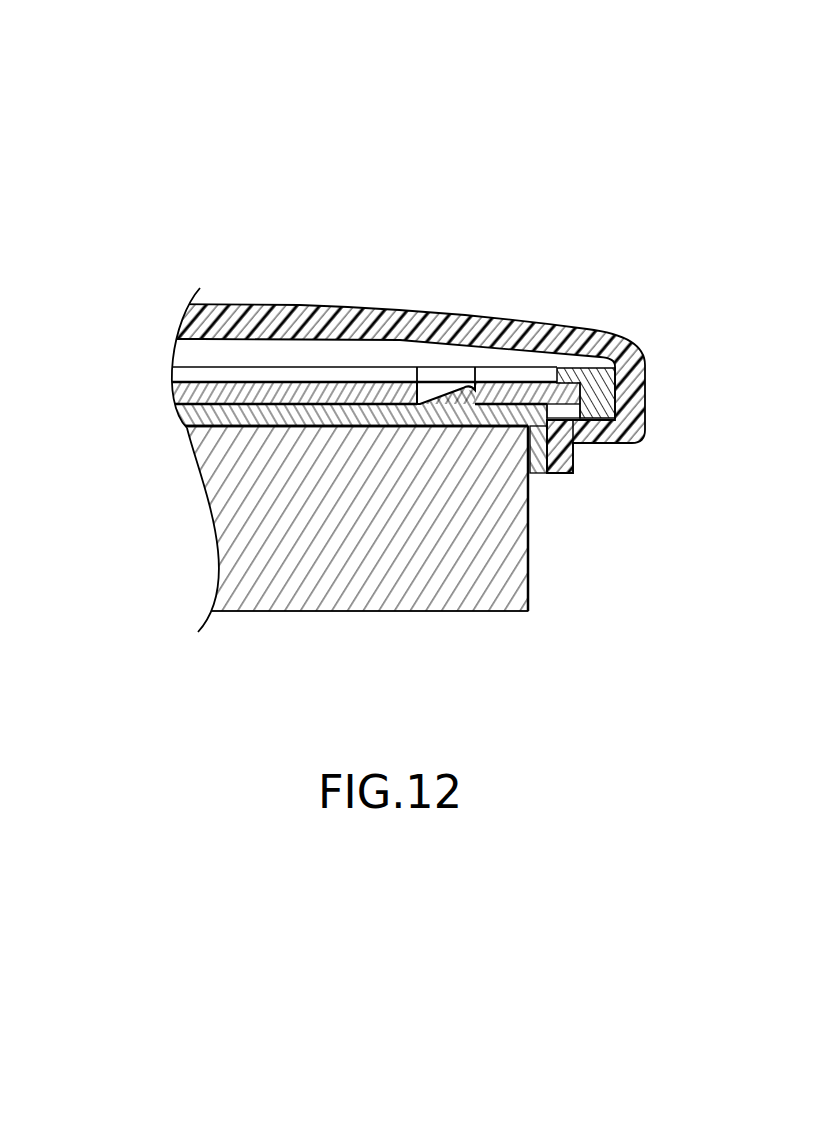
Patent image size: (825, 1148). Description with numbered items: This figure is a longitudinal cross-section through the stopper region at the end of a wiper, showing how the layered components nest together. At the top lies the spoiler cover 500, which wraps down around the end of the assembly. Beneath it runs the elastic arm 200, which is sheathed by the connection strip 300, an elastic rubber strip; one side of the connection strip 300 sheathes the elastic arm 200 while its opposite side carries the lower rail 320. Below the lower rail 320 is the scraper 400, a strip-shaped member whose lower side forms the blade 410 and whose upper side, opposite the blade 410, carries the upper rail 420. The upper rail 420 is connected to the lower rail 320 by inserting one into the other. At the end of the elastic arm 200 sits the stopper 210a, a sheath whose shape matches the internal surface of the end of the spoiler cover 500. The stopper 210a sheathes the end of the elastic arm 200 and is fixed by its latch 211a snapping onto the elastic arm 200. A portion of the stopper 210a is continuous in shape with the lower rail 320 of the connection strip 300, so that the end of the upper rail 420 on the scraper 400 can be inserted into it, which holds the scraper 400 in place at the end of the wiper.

The spoiler cover 500 is at (397, 302).
The connection strip 300 is at (338, 358).
The elastic arm 200 is at (242, 392).
The lower rail 320 is at (285, 425).
The latch 211a is at (443, 407).
The stopper 210a is at (600, 378).
The scraper 400 is at (540, 562).
The blade 410 is at (512, 590).
The upper rail 420 is at (510, 448).